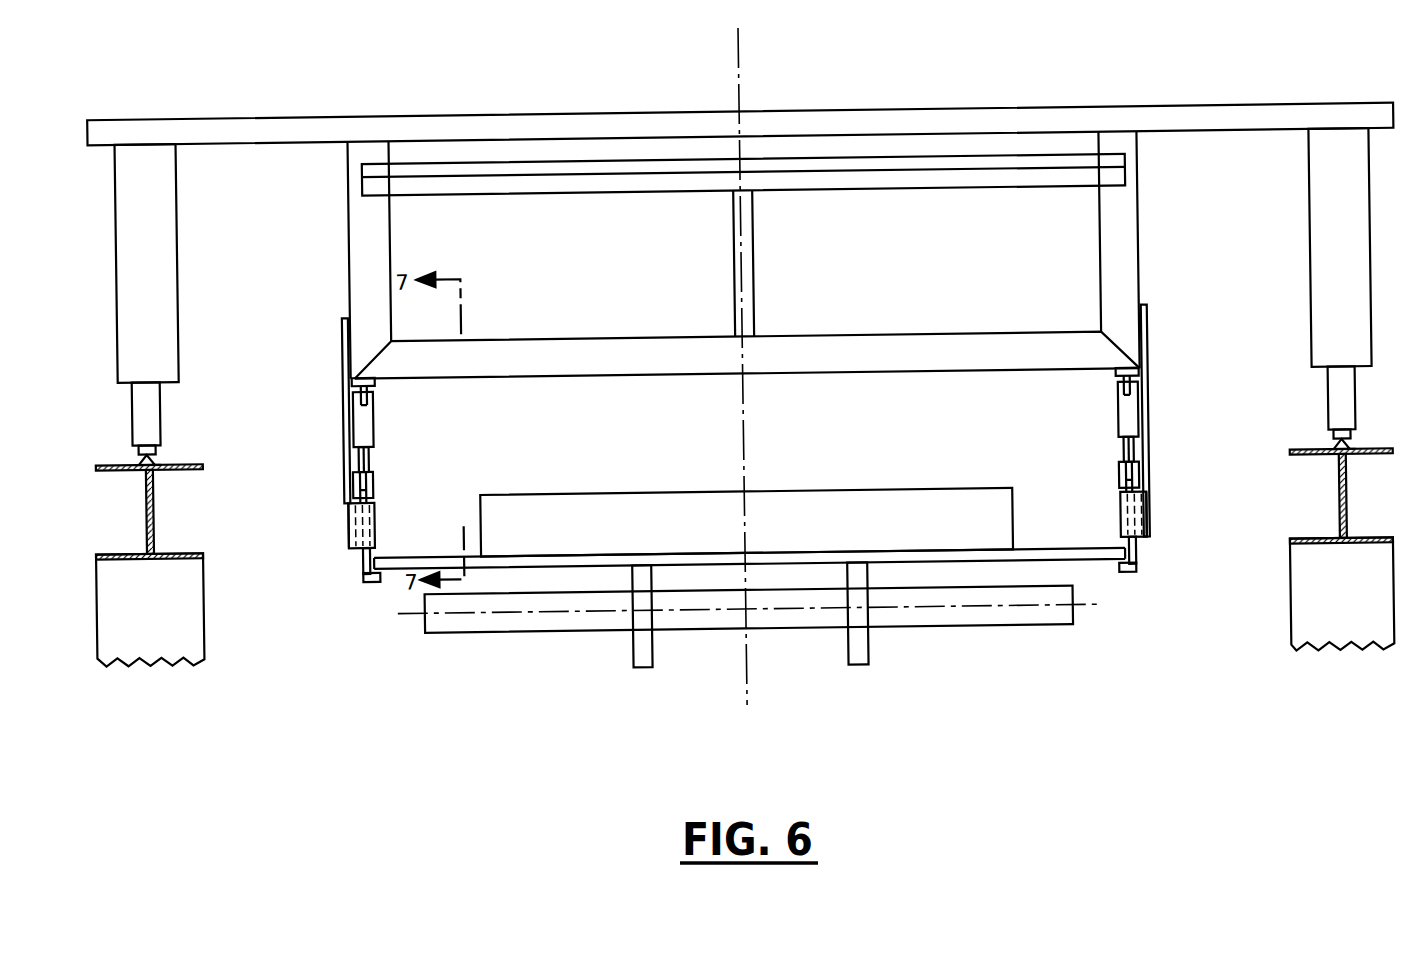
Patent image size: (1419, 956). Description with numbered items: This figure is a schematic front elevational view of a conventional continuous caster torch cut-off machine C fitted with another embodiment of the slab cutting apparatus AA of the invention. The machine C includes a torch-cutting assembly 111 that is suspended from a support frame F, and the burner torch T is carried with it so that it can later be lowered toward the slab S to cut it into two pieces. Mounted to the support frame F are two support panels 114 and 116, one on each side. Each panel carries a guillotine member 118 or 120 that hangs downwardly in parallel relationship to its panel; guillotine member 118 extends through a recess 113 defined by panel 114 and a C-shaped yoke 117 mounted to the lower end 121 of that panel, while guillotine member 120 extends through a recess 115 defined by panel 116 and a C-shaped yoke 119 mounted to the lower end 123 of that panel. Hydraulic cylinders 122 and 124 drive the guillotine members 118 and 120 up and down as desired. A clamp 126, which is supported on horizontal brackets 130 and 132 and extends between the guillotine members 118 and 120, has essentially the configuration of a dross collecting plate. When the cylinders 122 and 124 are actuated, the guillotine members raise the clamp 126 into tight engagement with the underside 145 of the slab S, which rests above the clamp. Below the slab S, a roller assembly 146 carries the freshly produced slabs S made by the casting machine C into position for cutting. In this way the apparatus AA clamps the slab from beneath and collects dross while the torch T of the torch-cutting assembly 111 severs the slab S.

The support frame F is at (251, 111).
The continuous caster torch cut-off machine C is at (1055, 98).
The burner torch T is at (756, 273).
The slab S is at (640, 491).
The apparatus AA is at (341, 409).
The torch-cutting assembly 111 is at (1143, 221).
The recess 113 is at (357, 546).
The support panel 114 is at (343, 466).
The recess 115 is at (1143, 545).
The support panel 116 is at (1150, 475).
The C-shaped yoke 117 is at (375, 523).
The guillotine member 118 is at (373, 492).
The C-shaped yoke 119 is at (1120, 522).
The guillotine member 120 is at (1120, 490).
The lower end 121 is at (347, 535).
The hydraulic cylinder 122 is at (375, 432).
The lower end 123 is at (1150, 538).
The hydraulic cylinder 124 is at (1115, 428).
The clamp 126 is at (524, 564).
The horizontal bracket 130 is at (370, 578).
The horizontal bracket 132 is at (1125, 581).
The underside 145 is at (560, 553).
The roller assembly 146 is at (698, 653).